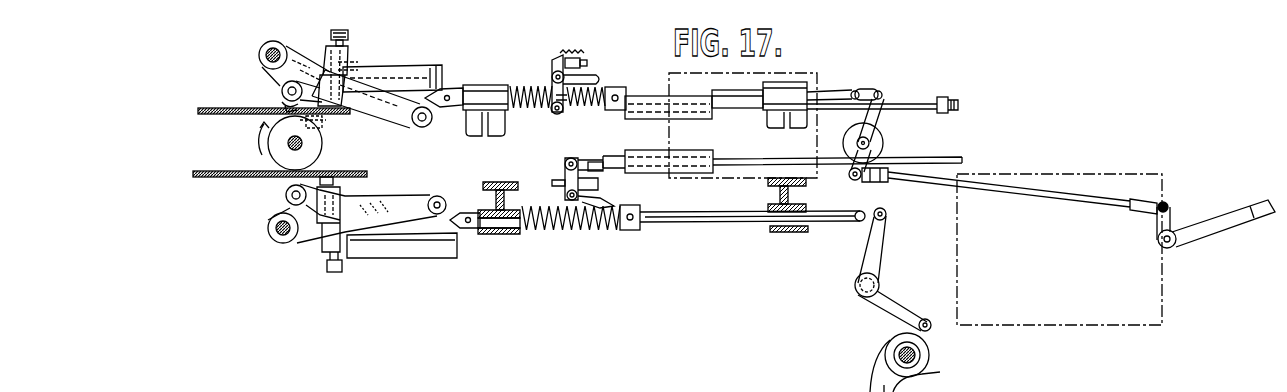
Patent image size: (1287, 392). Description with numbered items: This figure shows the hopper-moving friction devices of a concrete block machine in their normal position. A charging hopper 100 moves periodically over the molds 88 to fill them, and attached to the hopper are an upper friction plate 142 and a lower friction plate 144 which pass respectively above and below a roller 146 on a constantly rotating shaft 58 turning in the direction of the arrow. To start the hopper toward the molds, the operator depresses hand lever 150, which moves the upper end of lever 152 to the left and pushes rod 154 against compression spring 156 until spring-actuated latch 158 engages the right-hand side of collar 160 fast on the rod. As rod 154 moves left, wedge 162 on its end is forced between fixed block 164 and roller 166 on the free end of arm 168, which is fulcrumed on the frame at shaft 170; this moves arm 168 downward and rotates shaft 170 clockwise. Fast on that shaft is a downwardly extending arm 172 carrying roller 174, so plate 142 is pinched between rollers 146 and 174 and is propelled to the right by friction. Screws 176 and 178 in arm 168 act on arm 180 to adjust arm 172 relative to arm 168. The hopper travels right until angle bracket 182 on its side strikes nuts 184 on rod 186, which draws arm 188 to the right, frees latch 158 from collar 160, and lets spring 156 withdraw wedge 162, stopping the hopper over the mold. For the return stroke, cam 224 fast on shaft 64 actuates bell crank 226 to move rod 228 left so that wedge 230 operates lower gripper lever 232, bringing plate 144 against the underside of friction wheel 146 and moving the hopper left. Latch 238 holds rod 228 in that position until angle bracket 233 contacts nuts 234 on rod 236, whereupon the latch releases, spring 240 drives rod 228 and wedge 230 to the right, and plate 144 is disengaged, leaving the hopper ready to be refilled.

The constantly rotating shaft 58 is at (253, 141).
The shaft 64 is at (916, 355).
The mold 88 is at (1147, 290).
The charging hopper 100 is at (810, 72).
The upper friction plate 142 is at (202, 108).
The lower friction plate 144 is at (212, 178).
The roller 146 is at (313, 146).
The hand lever 150 is at (1240, 217).
The lever 152 is at (882, 103).
The rod 154 is at (837, 94).
The compression spring 156 is at (530, 108).
The spring-actuated latch 158 is at (590, 78).
The collar 160 is at (620, 90).
The wedge 162 is at (452, 92).
The fixed block 164 is at (397, 73).
The roller 166 is at (426, 125).
The arm 168 is at (401, 114).
The shaft 170 is at (264, 51).
The downwardly extending arm 172 is at (281, 84).
The roller 174 is at (280, 99).
The screw 176 is at (332, 33).
The screw 178 is at (322, 129).
The arm 180 is at (347, 67).
The angle bracket 182 is at (620, 113).
The nuts 184 is at (950, 99).
The rod 186 is at (912, 109).
The arm 188 is at (555, 90).
The cam 224 is at (887, 370).
The bell crank 226 is at (920, 283).
The rod 228 is at (727, 222).
The wedge 230 is at (453, 237).
The lower gripper lever 232 is at (358, 213).
The angle bracket 233 is at (635, 141).
The nuts 234 is at (617, 155).
The rod 236 is at (803, 152).
The latch 238 is at (612, 203).
The spring 240 is at (592, 225).